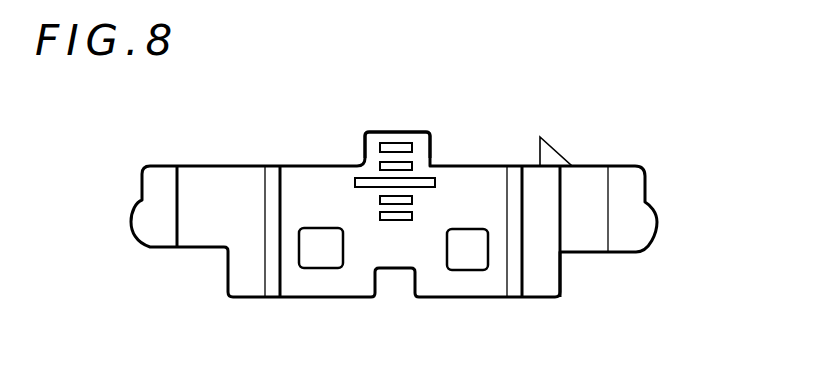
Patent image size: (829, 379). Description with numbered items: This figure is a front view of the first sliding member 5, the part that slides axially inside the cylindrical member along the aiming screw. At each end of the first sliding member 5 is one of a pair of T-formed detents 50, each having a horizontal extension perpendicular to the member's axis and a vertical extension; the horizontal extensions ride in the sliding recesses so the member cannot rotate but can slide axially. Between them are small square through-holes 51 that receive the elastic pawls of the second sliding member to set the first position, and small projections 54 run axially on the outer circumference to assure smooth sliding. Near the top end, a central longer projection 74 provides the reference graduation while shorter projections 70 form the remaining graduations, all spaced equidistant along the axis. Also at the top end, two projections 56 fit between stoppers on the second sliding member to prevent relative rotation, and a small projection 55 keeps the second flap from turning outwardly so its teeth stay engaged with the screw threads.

The first sliding member 5 is at (615, 137).
The T-formed detents 50 is at (150, 232).
The small square through-holes 51 is at (343, 253).
The small projections 54 is at (268, 265).
The small projection 55 is at (550, 138).
The projections 56 is at (373, 133).
The shorter projections 70 is at (432, 105).
The central longer projection 74 is at (345, 164).